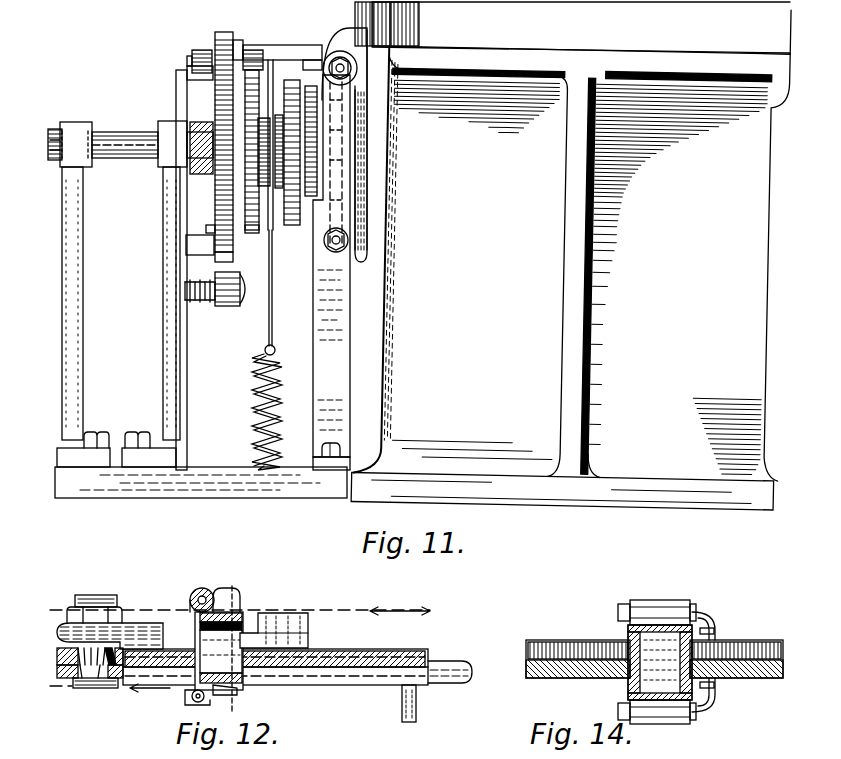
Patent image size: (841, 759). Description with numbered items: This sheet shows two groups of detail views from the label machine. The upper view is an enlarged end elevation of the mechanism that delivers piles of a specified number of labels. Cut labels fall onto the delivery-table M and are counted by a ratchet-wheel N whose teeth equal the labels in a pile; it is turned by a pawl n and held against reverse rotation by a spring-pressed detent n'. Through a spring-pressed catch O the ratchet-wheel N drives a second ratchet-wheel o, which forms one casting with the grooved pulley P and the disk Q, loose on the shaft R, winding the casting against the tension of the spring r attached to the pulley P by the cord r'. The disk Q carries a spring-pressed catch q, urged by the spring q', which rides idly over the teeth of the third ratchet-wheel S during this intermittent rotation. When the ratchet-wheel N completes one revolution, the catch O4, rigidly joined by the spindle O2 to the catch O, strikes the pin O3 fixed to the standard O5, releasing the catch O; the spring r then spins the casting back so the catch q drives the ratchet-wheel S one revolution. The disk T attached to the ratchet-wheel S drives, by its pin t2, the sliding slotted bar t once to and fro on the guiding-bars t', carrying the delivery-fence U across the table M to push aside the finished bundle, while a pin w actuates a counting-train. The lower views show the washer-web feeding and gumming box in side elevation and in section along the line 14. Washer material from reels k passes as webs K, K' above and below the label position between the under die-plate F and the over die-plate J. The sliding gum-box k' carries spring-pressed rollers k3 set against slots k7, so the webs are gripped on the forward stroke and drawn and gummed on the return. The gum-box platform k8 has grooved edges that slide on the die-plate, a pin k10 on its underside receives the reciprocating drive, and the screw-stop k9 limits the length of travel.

In FIG. 11, the delivery-fence U is at (571, 256).
In FIG. 11, the delivery-table M is at (585, 52).
In FIG. 11, the shaft R is at (122, 140).
In FIG. 11, the standard O5 is at (152, 236).
In FIG. 11, the catch O4 is at (192, 62).
In FIG. 11, the pin O3 is at (205, 75).
In FIG. 11, the pawl n is at (215, 128).
In FIG. 11, the spindle O2 is at (241, 40).
In FIG. 11, the spring-pressed catch O is at (256, 50).
In FIG. 11, the second ratchet-wheel o is at (252, 232).
In FIG. 11, the grooved pulley P is at (272, 112).
In FIG. 11, the disk Q is at (290, 226).
In FIG. 11, the third ratchet-wheel S is at (311, 197).
In FIG. 11, the spring q' is at (316, 267).
In FIG. 11, the spring-pressed catch q is at (311, 72).
In FIG. 11, the disk T is at (353, 145).
In FIG. 11, the guiding-bars t' is at (357, 156).
In FIG. 11, the sliding slotted bar t is at (370, 170).
In FIG. 11, the pin t2 is at (367, 155).
In FIG. 11, the pin w is at (215, 228).
In FIG. 11, the ratchet-wheel N is at (215, 250).
In FIG. 11, the spring-pressed detent n' is at (215, 305).
In FIG. 11, the cord r' is at (282, 292).
In FIG. 11, the spring r is at (255, 412).
In FIG. 12, the washer-web K is at (231, 596).
In FIG. 12, the washer-web K' is at (99, 697).
In FIG. 12, the over die-plate J is at (57, 628).
In FIG. 14, the over die-plate J is at (780, 640).
In FIG. 12, the under die-plate F is at (57, 657).
In FIG. 14, the under die-plate F is at (775, 677).
In FIG. 12, the reels k is at (201, 644).
In FIG. 12, the sliding gum-box k' is at (207, 649).
In FIG. 14, the sliding gum-box k' is at (644, 656).
In FIG. 12, the spring-pressed rollers k3 is at (190, 598).
In FIG. 14, the spring-pressed rollers k3 is at (656, 600).
In FIG. 12, the slots k7 is at (240, 692).
In FIG. 12, the section line 14 is at (250, 585).
In FIG. 12, the screw-stop k9 is at (289, 613).
In FIG. 12, the gum-box platform k8 is at (432, 656).
In FIG. 14, the gum-box platform k8 is at (626, 682).
In FIG. 12, the pin k10 is at (418, 704).